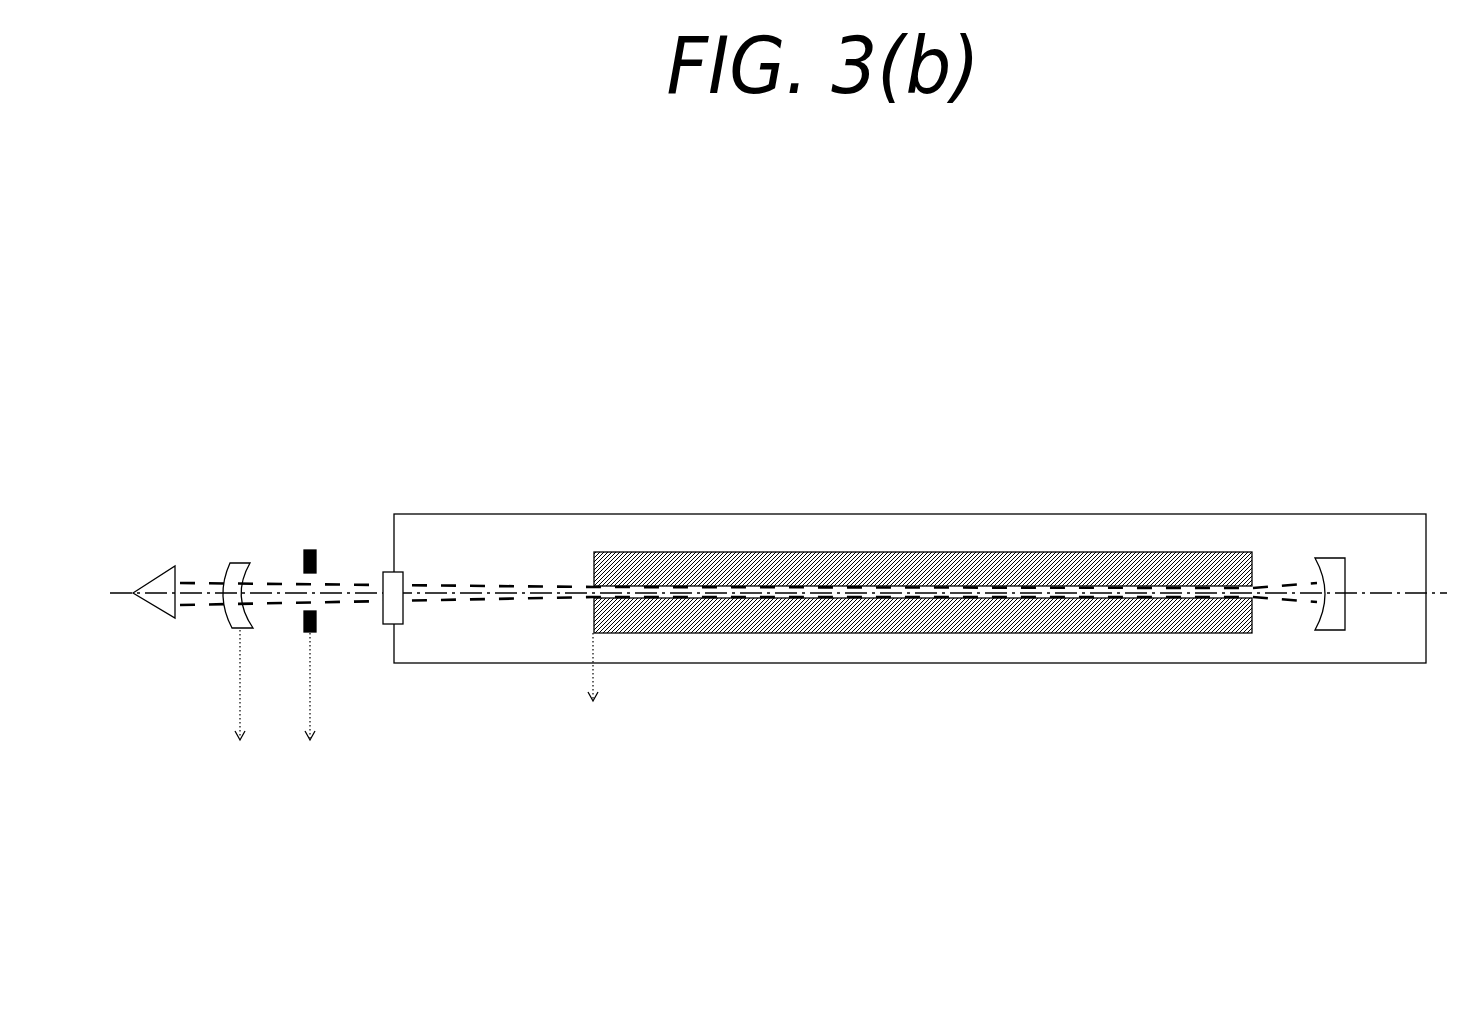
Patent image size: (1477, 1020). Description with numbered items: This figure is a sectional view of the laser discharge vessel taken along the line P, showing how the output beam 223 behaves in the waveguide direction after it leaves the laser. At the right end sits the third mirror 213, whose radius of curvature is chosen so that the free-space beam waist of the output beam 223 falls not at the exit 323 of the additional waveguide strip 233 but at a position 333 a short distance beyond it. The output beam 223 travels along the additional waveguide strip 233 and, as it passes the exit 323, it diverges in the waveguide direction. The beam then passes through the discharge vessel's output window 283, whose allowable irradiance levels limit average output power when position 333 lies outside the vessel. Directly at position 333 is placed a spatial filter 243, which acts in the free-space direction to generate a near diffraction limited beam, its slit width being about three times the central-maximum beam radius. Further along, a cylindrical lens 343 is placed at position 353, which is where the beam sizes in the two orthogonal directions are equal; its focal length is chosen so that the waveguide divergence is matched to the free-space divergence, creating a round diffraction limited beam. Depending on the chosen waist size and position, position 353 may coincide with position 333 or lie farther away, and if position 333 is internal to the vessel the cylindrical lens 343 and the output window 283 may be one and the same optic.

The third mirror 213 is at (1347, 630).
The output beam 223 is at (485, 592).
The additional waveguide strip 233 is at (858, 619).
The spatial filter 243 is at (303, 620).
The output window 283 is at (383, 618).
The exit of the additional waveguide strip 323 is at (593, 696).
The position 333 is at (307, 701).
The cylindrical lens 343 is at (235, 565).
The position 353 is at (237, 700).
The line P is at (788, 594).